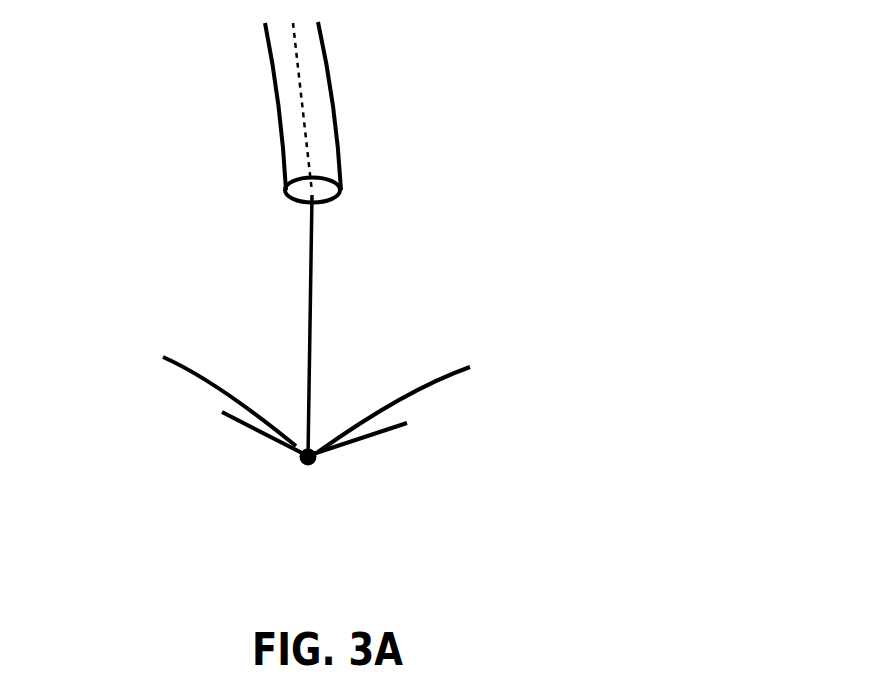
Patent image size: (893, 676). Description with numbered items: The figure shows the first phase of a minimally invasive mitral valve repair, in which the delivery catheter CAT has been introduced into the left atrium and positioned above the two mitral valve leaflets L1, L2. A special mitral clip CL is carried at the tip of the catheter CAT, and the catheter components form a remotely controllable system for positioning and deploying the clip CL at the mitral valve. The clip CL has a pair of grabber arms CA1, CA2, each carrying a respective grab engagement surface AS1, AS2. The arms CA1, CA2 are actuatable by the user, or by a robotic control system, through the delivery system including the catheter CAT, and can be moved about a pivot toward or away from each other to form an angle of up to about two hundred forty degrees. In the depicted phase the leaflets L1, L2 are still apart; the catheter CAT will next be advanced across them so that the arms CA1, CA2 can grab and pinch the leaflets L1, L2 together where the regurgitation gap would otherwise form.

The catheter CAT is at (343, 110).
The clip CL is at (318, 486).
The mitral valve leaflet L1 is at (195, 358).
The mitral valve leaflet L2 is at (440, 368).
The grab engagement surface AS1 is at (248, 415).
The grab engagement surface AS2 is at (397, 422).
The grabber arm CA1 is at (257, 452).
The grabber arm CA2 is at (390, 453).